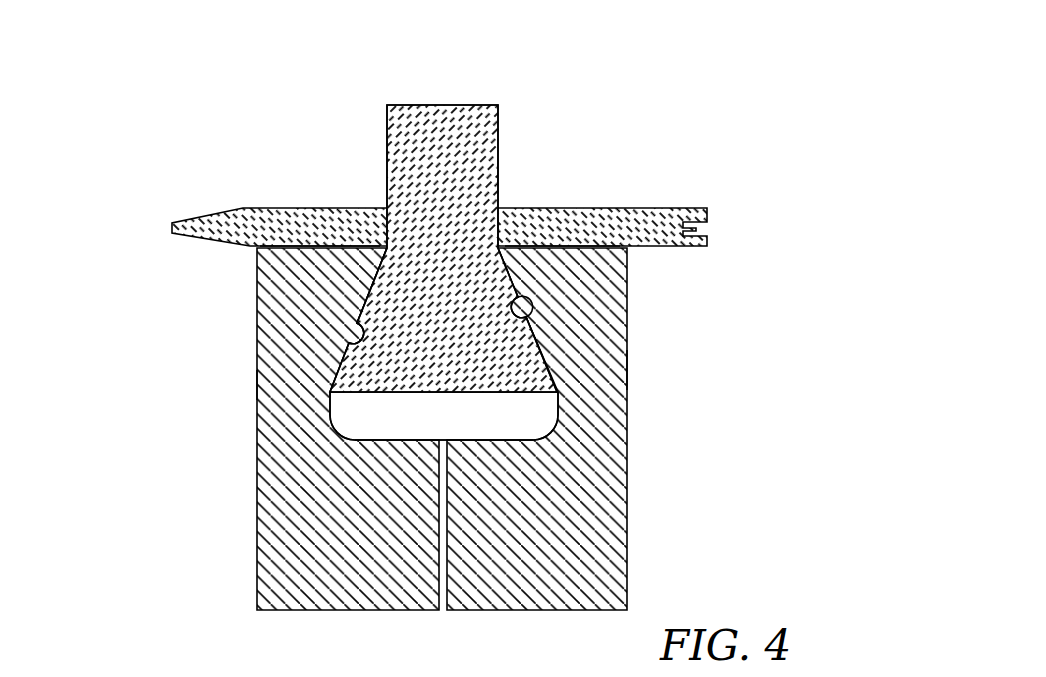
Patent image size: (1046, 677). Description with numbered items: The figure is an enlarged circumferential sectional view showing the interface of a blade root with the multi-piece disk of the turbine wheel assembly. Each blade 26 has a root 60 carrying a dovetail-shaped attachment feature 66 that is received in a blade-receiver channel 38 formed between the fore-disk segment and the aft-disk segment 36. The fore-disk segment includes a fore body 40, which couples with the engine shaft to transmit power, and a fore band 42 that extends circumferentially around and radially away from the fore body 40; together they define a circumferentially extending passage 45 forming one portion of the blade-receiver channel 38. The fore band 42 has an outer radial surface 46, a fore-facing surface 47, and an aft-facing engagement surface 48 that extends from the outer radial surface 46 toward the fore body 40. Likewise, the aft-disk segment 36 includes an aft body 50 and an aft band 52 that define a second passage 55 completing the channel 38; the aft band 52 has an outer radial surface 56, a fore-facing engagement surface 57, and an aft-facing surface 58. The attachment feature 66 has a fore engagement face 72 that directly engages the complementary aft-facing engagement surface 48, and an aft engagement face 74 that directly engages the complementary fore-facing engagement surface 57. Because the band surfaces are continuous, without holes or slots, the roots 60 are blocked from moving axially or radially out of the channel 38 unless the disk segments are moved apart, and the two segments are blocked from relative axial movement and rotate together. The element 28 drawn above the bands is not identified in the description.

The blade 26 is at (511, 212).
The workpiece 28 is at (439, 179).
The aft-disk segment 36 is at (479, 429).
The blade-receiver channel 38 is at (500, 348).
The fore body 40 is at (255, 590).
The fore band 42 is at (127, 318).
The circumferentially extending passage 45 is at (367, 412).
The outer radial surface 46 is at (293, 245).
The fore-facing surface 47 is at (257, 385).
The aft-facing engagement surface 48 is at (360, 320).
The aft body 50 is at (630, 563).
The aft band 52 is at (809, 320).
The circumferentially extending passage 55 is at (526, 418).
The outer radial surface 56 is at (527, 245).
The fore-facing engagement surface 57 is at (517, 300).
The aft-facing surface 58 is at (627, 368).
The root 60 is at (598, 312).
The attachment feature 66 is at (375, 372).
The fore engagement face 72 is at (350, 357).
The aft engagement face 74 is at (548, 373).